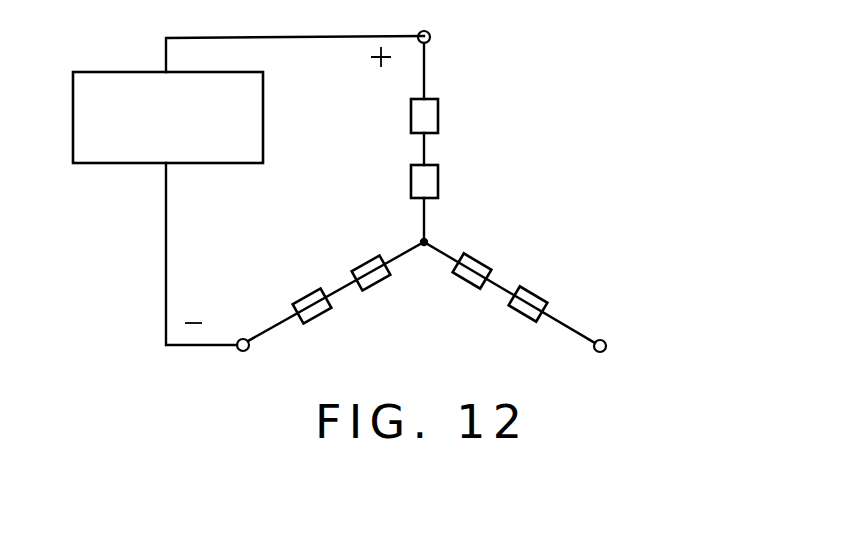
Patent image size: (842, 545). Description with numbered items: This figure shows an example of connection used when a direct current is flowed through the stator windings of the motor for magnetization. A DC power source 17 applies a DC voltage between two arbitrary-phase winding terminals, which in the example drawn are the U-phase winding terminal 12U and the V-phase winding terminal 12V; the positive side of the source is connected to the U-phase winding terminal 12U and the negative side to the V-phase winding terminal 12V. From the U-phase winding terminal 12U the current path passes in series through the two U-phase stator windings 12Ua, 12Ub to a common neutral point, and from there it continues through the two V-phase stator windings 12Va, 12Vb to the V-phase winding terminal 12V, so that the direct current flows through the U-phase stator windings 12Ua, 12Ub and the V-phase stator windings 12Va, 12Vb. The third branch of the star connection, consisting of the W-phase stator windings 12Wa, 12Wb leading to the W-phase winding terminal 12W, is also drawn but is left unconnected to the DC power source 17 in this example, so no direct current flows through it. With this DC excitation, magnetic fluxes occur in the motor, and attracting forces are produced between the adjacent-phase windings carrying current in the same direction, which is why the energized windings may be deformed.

The DC power source 17 is at (148, 163).
The U-phase winding terminal 12U is at (430, 32).
The U-phase stator winding 12Ua is at (438, 104).
The U-phase stator winding 12Ub is at (438, 174).
The V-phase winding terminal 12V is at (241, 351).
The V-phase stator winding 12Va is at (290, 307).
The V-phase stator winding 12Vb is at (358, 263).
The W-phase winding terminal 12W is at (606, 347).
The W-phase stator winding 12Wa is at (538, 298).
The W-phase stator winding 12Wb is at (468, 268).